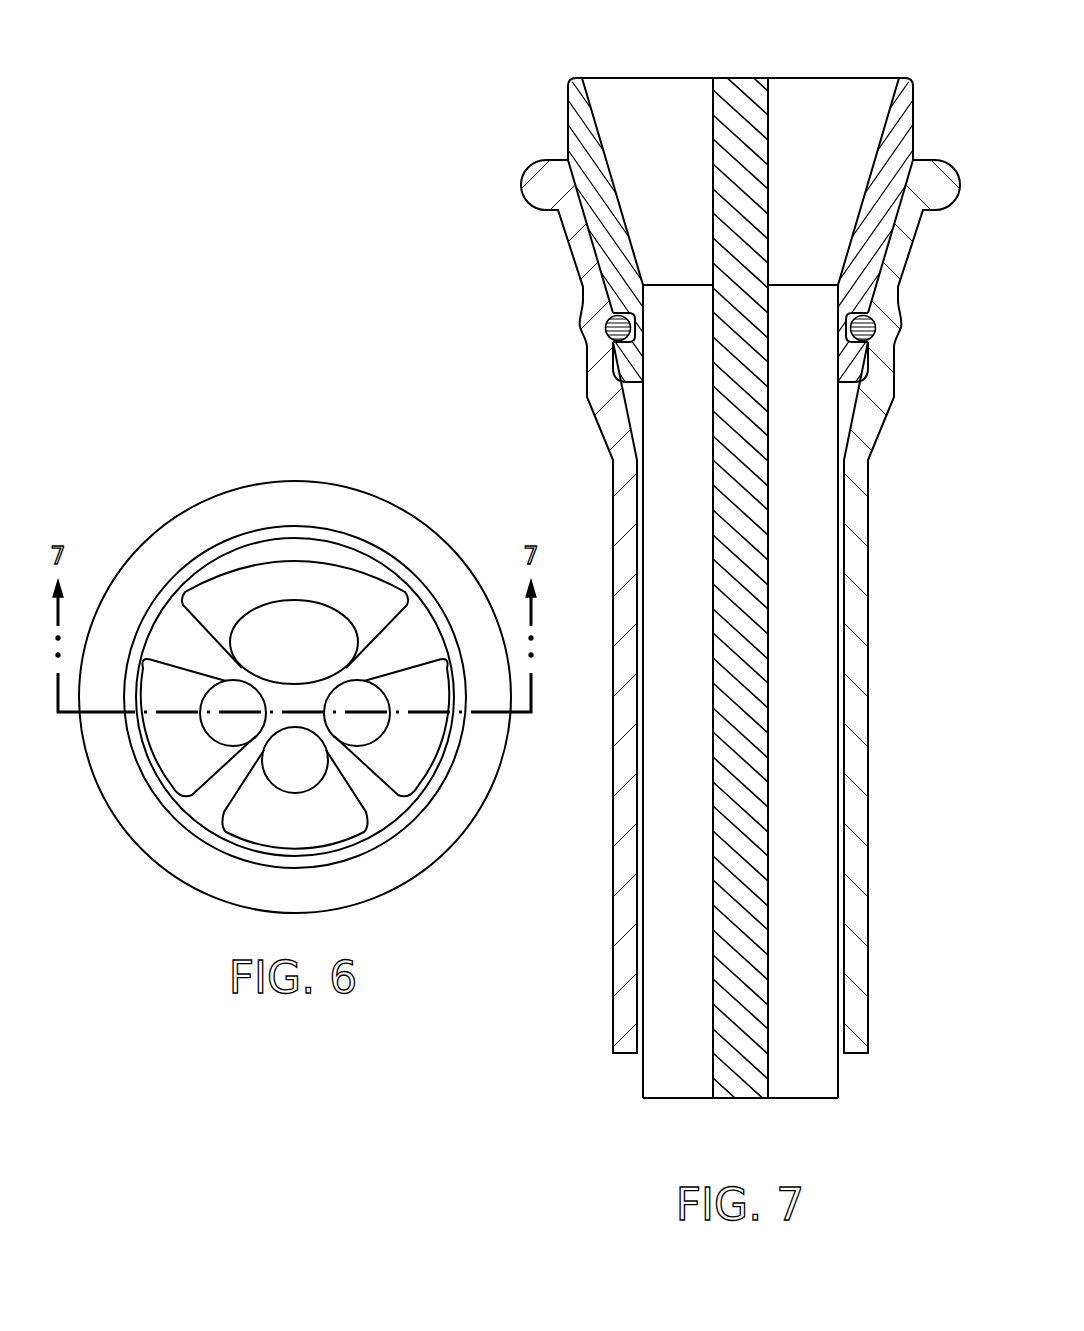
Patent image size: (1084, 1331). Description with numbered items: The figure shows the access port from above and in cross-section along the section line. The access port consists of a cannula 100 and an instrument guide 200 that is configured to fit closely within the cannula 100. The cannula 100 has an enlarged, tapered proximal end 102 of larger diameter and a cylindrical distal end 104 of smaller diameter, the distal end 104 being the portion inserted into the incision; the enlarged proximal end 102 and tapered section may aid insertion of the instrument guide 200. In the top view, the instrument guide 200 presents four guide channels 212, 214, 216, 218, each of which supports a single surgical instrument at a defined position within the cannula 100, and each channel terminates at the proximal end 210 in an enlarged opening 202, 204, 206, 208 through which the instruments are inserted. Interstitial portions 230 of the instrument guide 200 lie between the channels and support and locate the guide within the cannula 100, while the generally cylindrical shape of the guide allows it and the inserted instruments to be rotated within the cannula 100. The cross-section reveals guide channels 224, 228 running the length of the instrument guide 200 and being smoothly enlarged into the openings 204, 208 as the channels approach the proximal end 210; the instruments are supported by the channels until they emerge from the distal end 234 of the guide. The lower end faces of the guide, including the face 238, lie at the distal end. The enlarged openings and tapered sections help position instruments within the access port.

In FIG. 6, the cannula 100 is at (293, 480).
In FIG. 7, the cannula 100 is at (587, 371).
In FIG. 7, the proximal end 102 is at (522, 184).
In FIG. 7, the distal end 104 is at (623, 1055).
In FIG. 6, the instrument guide 200 is at (252, 528).
In FIG. 7, the instrument guide 200 is at (567, 123).
In FIG. 6, the opening 202 is at (357, 583).
In FIG. 6, the opening 204 is at (423, 727).
In FIG. 7, the opening 204 is at (840, 110).
In FIG. 6, the opening 206 is at (280, 827).
In FIG. 6, the opening 208 is at (162, 725).
In FIG. 7, the opening 208 is at (637, 110).
In FIG. 6, the proximal end 210 is at (417, 633).
In FIG. 7, the proximal end 210 is at (742, 78).
In FIG. 6, the guide channel 212 is at (297, 600).
In FIG. 6, the guide channel 214 is at (390, 713).
In FIG. 7, the guide channel 214 is at (842, 381).
In FIG. 6, the guide channel 216 is at (294, 793).
In FIG. 6, the guide channel 218 is at (200, 712).
In FIG. 7, the guide channel 218 is at (643, 383).
In FIG. 7, the guide channel 224 is at (808, 882).
In FIG. 7, the guide channel 228 is at (672, 882).
In FIG. 7, the interstitial portion 230 is at (740, 1100).
In FIG. 7, the distal end 234 is at (806, 1100).
In FIG. 7, the left end face 238 is at (674, 1100).